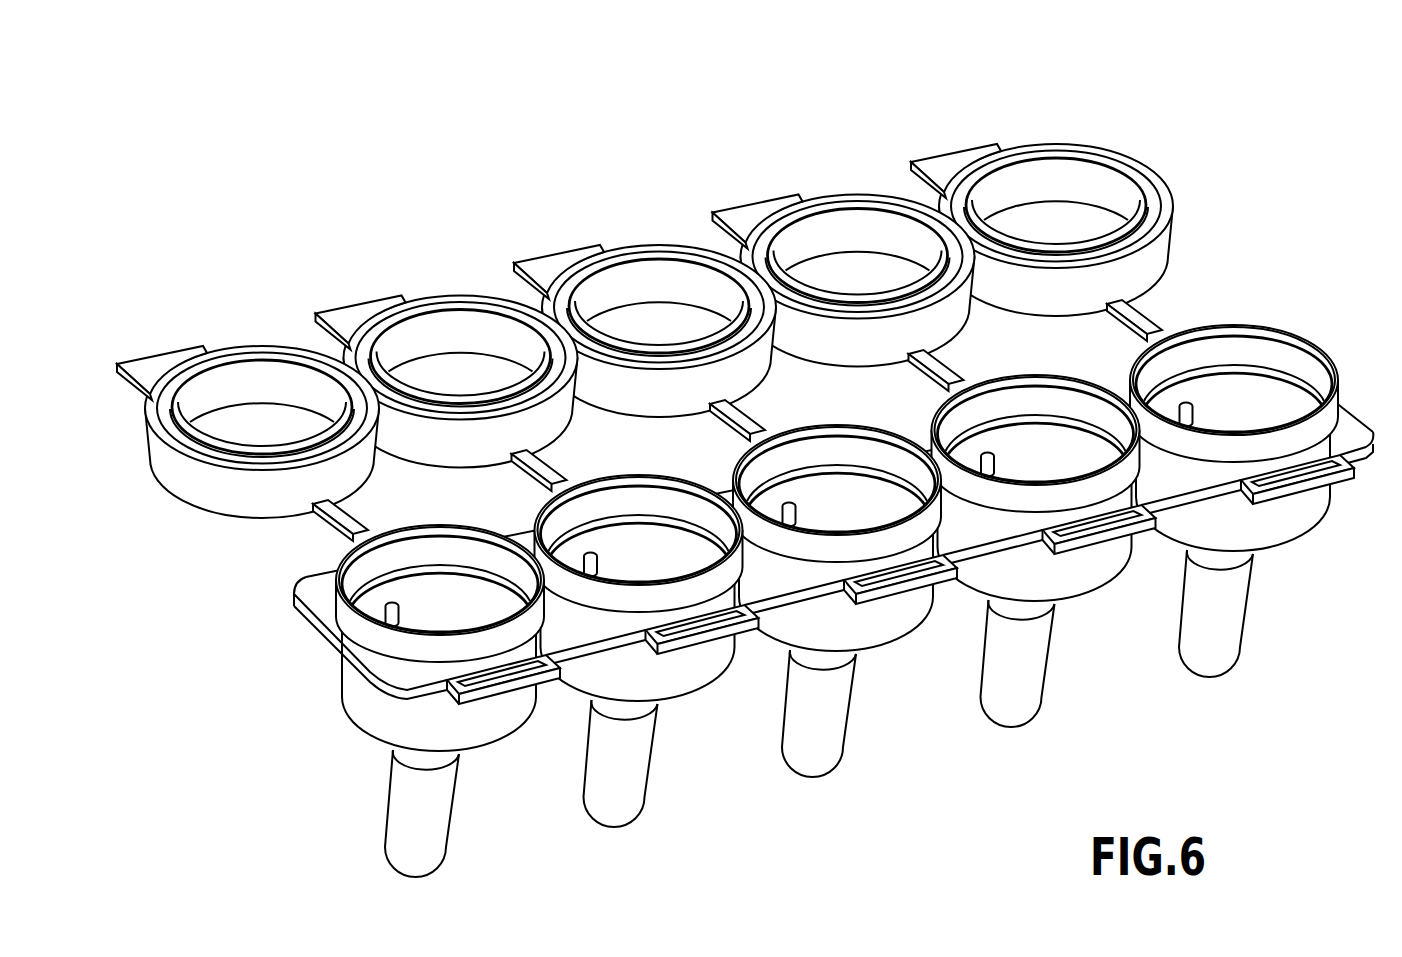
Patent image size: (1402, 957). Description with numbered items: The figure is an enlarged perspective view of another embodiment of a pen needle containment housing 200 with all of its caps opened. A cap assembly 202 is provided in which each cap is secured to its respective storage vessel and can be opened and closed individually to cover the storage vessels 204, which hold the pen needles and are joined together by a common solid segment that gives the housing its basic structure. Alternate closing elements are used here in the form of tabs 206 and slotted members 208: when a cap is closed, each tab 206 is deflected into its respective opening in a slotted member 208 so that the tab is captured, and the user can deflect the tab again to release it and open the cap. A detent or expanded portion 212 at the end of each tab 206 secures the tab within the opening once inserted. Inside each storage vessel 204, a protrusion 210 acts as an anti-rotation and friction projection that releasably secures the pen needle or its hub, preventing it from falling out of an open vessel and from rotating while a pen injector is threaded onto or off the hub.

The pen needle containment housing 200 is at (751, 465).
The cap assembly 202 is at (1130, 160).
The storage vessels 204 is at (1300, 343).
The tabs 206 is at (158, 356).
The slotted members 208 is at (534, 695).
The protrusion 210 is at (399, 602).
The detent or expanded portion 212 is at (204, 345).